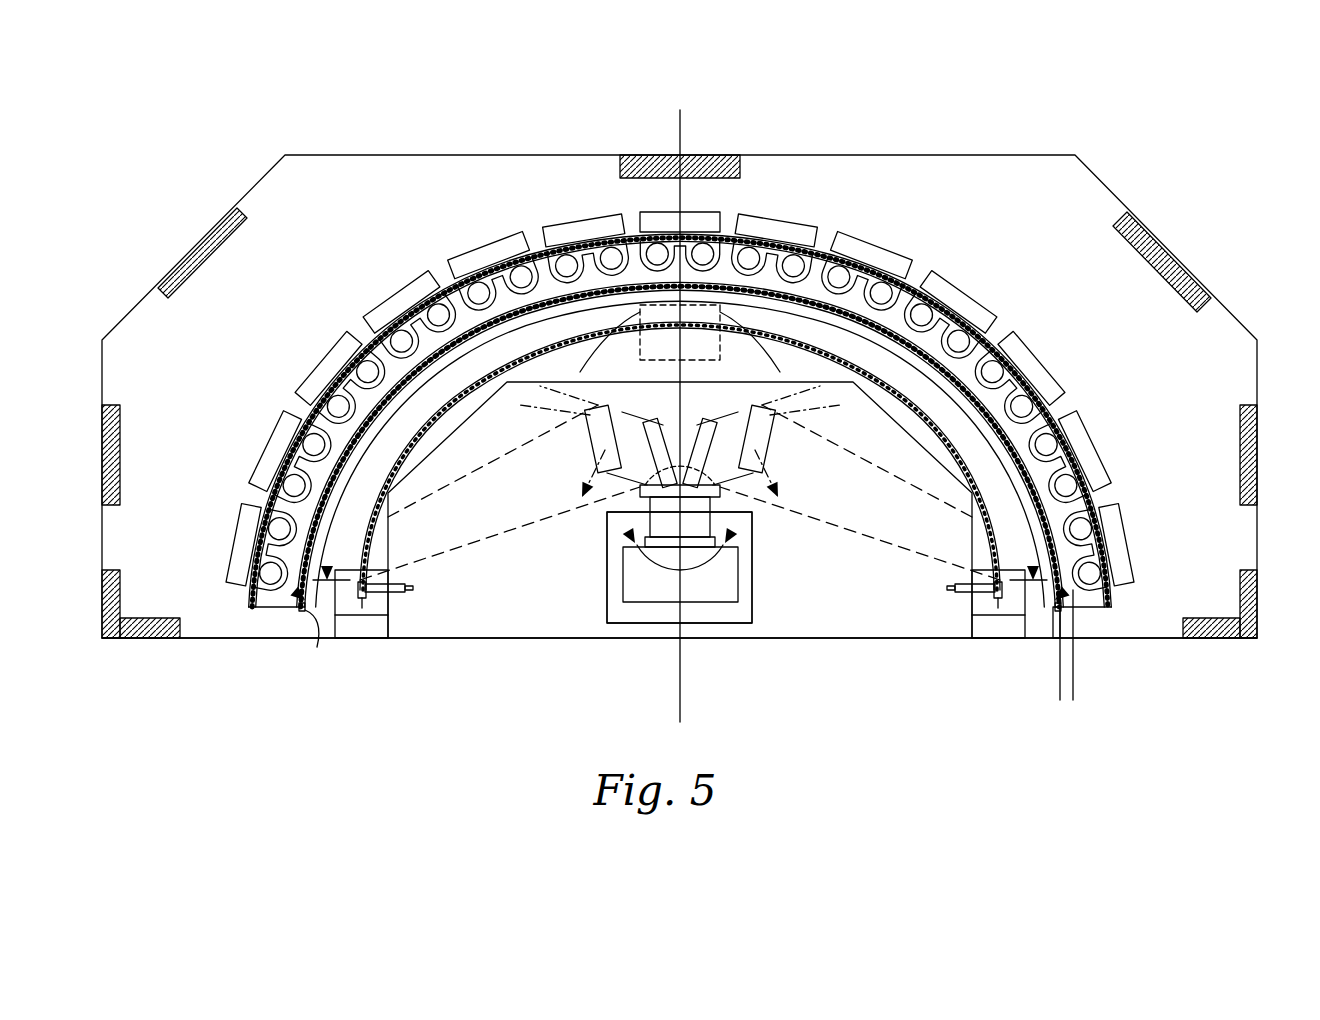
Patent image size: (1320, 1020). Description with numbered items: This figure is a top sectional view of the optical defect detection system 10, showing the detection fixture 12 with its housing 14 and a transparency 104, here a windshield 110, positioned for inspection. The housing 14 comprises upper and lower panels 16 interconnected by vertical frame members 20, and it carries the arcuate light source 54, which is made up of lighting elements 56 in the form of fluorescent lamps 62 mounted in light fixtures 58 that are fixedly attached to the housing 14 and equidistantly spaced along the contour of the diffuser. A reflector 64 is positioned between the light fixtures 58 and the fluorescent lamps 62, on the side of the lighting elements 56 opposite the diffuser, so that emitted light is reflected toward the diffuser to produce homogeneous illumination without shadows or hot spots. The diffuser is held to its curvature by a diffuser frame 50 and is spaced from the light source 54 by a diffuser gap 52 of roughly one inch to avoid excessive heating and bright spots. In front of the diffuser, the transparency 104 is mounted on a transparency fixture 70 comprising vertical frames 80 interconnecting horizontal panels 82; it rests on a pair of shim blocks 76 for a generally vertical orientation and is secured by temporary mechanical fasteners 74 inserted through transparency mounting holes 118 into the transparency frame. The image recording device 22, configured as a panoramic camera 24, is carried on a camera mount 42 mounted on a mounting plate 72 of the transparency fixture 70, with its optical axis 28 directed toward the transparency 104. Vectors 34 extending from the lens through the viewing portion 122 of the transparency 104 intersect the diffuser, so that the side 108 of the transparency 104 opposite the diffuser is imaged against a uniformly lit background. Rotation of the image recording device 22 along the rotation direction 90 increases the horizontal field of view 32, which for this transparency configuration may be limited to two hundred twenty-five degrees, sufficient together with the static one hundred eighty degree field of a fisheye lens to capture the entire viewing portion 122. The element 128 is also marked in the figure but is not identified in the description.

The optical defect detection system 10 is at (153, 102).
The detection fixture 12 is at (679, 369).
The housing 14 is at (430, 168).
The panel 16 is at (278, 252).
The vertical frame member 20 is at (700, 160).
The image recording device 22 is at (680, 540).
The panoramic camera 24 is at (622, 671).
The optical axis 28 is at (666, 395).
The horizontal field of view 32 is at (745, 345).
The vector 34 is at (497, 537).
The camera mount 42 is at (737, 625).
The diffuser frame 50 is at (307, 625).
The diffuser gap 52 is at (1012, 675).
The light source 54 is at (691, 402).
The lighting element 56 is at (691, 402).
The light fixture 58 is at (691, 402).
The fluorescent lamp 62 is at (465, 256).
The reflector 64 is at (1112, 545).
The transparency fixture 70 is at (845, 640).
The mounting plate 72 is at (800, 602).
The temporary mechanical fastener 74 is at (412, 594).
The shim block 76 is at (372, 605).
The vertical frame 80 is at (605, 320).
The horizontal panel 82 is at (300, 584).
The rotation direction 90 is at (686, 572).
The transparency 104 is at (313, 358).
The side of the transparency 108 is at (553, 343).
The windshield 110 is at (370, 370).
The transparency mounting hole 118 is at (366, 593).
The viewing portion 122 is at (955, 318).
The upper guide 128 is at (362, 586).